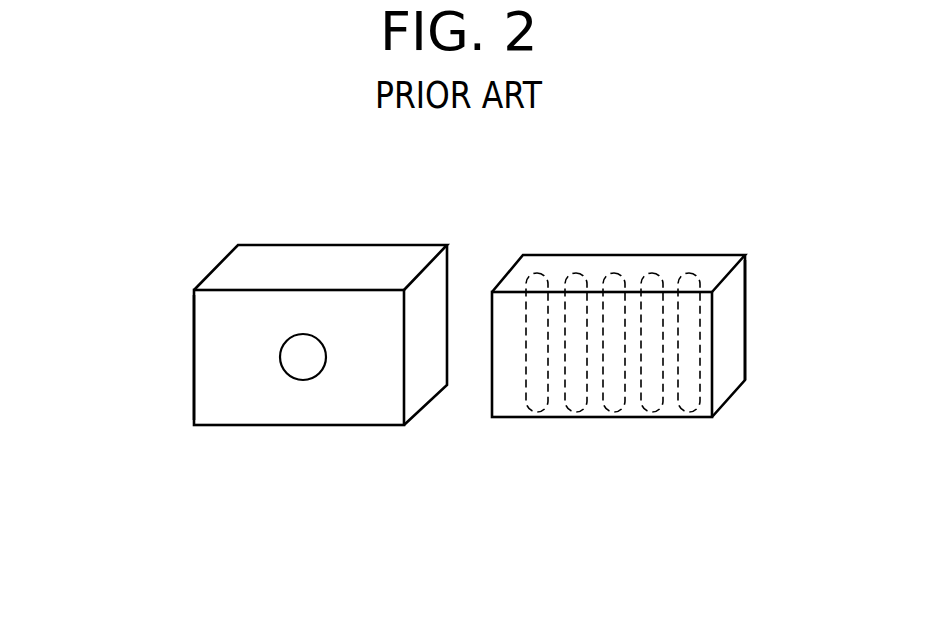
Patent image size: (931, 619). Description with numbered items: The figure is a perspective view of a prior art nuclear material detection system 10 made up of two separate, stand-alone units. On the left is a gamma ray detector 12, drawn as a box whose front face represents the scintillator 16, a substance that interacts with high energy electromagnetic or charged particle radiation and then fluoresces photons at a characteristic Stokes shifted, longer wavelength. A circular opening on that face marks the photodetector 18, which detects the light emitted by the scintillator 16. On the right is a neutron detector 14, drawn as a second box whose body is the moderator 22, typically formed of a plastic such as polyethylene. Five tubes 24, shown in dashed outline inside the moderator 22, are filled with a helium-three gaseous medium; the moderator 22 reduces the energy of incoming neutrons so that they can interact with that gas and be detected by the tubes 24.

The detection system 10 is at (213, 197).
The gamma ray detector 12 is at (338, 223).
The neutron detector 14 is at (645, 232).
The scintillator 16 is at (194, 358).
The photodetector 18 is at (280, 357).
The moderator 22 is at (745, 312).
The tubes 24 is at (689, 412).